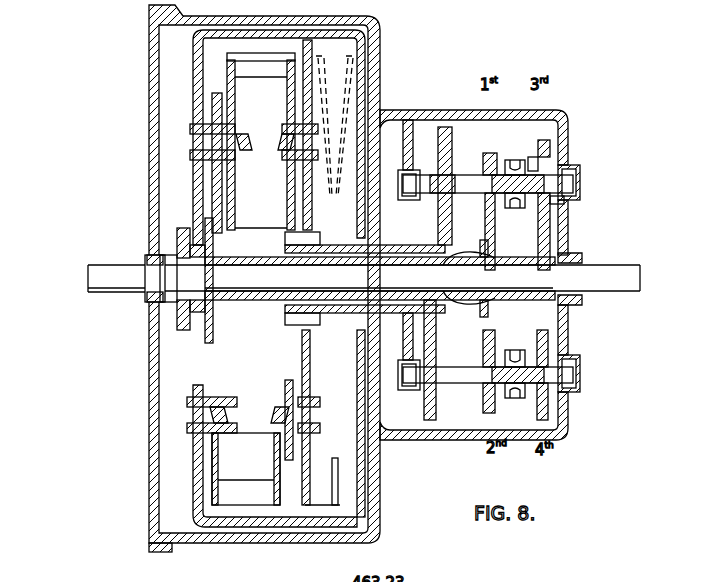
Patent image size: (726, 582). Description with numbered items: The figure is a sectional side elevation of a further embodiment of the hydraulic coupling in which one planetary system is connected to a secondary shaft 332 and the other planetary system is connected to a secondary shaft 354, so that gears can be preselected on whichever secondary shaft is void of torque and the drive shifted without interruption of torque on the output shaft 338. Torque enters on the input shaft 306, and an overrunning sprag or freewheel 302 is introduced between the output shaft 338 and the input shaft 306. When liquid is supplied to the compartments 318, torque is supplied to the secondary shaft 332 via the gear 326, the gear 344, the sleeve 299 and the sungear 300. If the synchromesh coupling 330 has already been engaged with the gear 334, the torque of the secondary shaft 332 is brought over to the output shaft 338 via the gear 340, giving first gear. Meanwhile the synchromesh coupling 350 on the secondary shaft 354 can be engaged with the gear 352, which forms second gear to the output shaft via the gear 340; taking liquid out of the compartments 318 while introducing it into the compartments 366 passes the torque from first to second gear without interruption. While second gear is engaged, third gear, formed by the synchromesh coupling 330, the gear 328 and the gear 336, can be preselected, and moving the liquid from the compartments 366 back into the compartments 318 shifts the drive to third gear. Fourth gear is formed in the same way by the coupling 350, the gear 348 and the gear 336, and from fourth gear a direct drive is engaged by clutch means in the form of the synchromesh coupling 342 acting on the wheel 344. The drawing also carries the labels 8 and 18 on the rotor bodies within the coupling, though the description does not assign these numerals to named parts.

The rotor 8 is at (236, 497).
The rotor 18 is at (250, 228).
The sleeve 299 is at (265, 302).
The sungear 300 is at (213, 318).
The overrunning sprag or freewheel 302 is at (190, 313).
The input shaft 306 is at (124, 286).
The compartments 318 is at (223, 47).
The gear 326 is at (455, 131).
The gear 328 is at (552, 145).
The synchromesh coupling 330 is at (545, 163).
The secondary shaft 332 is at (562, 183).
The gear 334 is at (550, 205).
The gear 336 is at (563, 232).
The output shaft 338 is at (623, 276).
The gear 340 is at (496, 240).
The synchromesh coupling 342 is at (493, 270).
The gear 344 is at (484, 310).
The gear 348 is at (520, 395).
The synchromesh coupling 350 is at (497, 408).
The gear 352 is at (562, 423).
The secondary shaft 354 is at (462, 386).
The compartments 366 is at (307, 540).